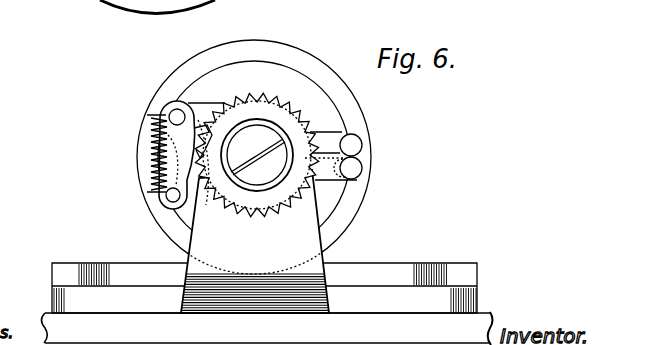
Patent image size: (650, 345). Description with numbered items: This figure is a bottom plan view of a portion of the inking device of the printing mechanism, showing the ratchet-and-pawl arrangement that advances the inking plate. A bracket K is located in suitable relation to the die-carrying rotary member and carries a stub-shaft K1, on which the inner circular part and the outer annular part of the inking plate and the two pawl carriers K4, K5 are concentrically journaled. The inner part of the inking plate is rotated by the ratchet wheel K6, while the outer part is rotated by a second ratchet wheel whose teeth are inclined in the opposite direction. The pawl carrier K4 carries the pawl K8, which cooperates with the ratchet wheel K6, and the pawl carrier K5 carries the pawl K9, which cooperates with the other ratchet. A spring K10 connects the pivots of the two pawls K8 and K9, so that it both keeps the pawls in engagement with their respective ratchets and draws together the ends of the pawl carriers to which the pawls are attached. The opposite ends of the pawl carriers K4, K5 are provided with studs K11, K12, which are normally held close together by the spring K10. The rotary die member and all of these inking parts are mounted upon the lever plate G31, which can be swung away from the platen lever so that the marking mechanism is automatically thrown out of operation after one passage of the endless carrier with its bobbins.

The bracket K is at (470, 273).
The lever plate G31 is at (296, 297).
The stub-shaft K1 is at (257, 128).
The pawl carrier K4 is at (203, 110).
The pawl carrier K5 is at (193, 203).
The ratchet wheel K6 is at (303, 120).
The pawl K8 is at (157, 150).
The pawl K9 is at (165, 200).
The spring K10 is at (160, 145).
The stud K11 is at (358, 167).
The stud K12 is at (355, 143).